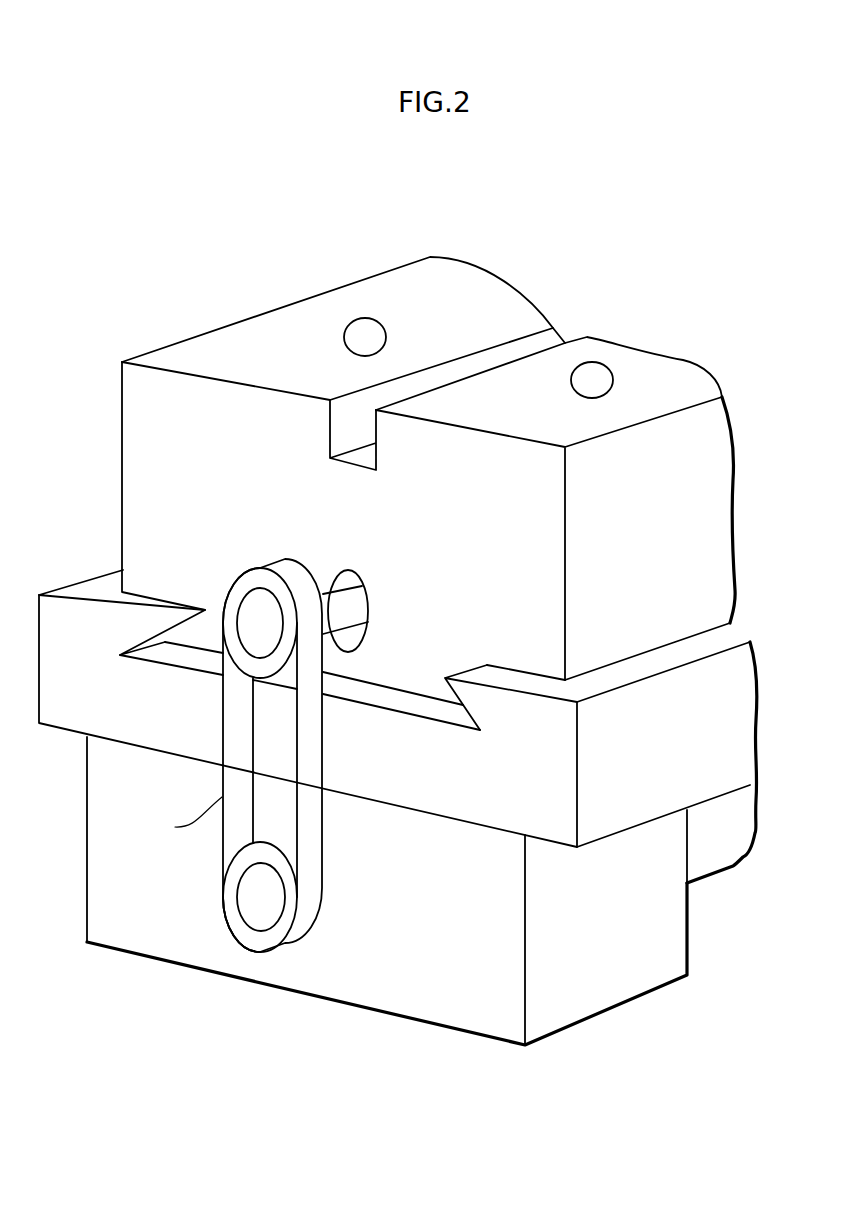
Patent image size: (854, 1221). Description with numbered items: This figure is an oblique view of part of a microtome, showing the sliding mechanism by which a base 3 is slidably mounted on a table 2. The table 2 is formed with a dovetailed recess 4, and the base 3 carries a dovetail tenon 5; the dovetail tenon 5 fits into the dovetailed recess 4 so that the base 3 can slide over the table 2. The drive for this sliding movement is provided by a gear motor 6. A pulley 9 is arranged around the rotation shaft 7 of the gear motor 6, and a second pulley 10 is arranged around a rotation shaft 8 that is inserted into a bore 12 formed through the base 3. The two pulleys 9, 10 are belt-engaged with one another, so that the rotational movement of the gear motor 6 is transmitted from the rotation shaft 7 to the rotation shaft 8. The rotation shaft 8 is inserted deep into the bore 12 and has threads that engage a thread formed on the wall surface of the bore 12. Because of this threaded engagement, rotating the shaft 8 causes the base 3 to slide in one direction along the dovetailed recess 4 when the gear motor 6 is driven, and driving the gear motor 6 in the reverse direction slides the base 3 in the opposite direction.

The table 2 is at (727, 682).
The base 3 is at (712, 437).
The dovetailed recess 4 is at (452, 713).
The dovetail tenon 5 is at (193, 645).
The gear motor 6 is at (718, 850).
The rotation shaft 7 is at (268, 917).
The rotation shaft 8 is at (255, 607).
The pulley 9 is at (240, 933).
The pulley 10 is at (282, 588).
The bore 12 is at (348, 578).